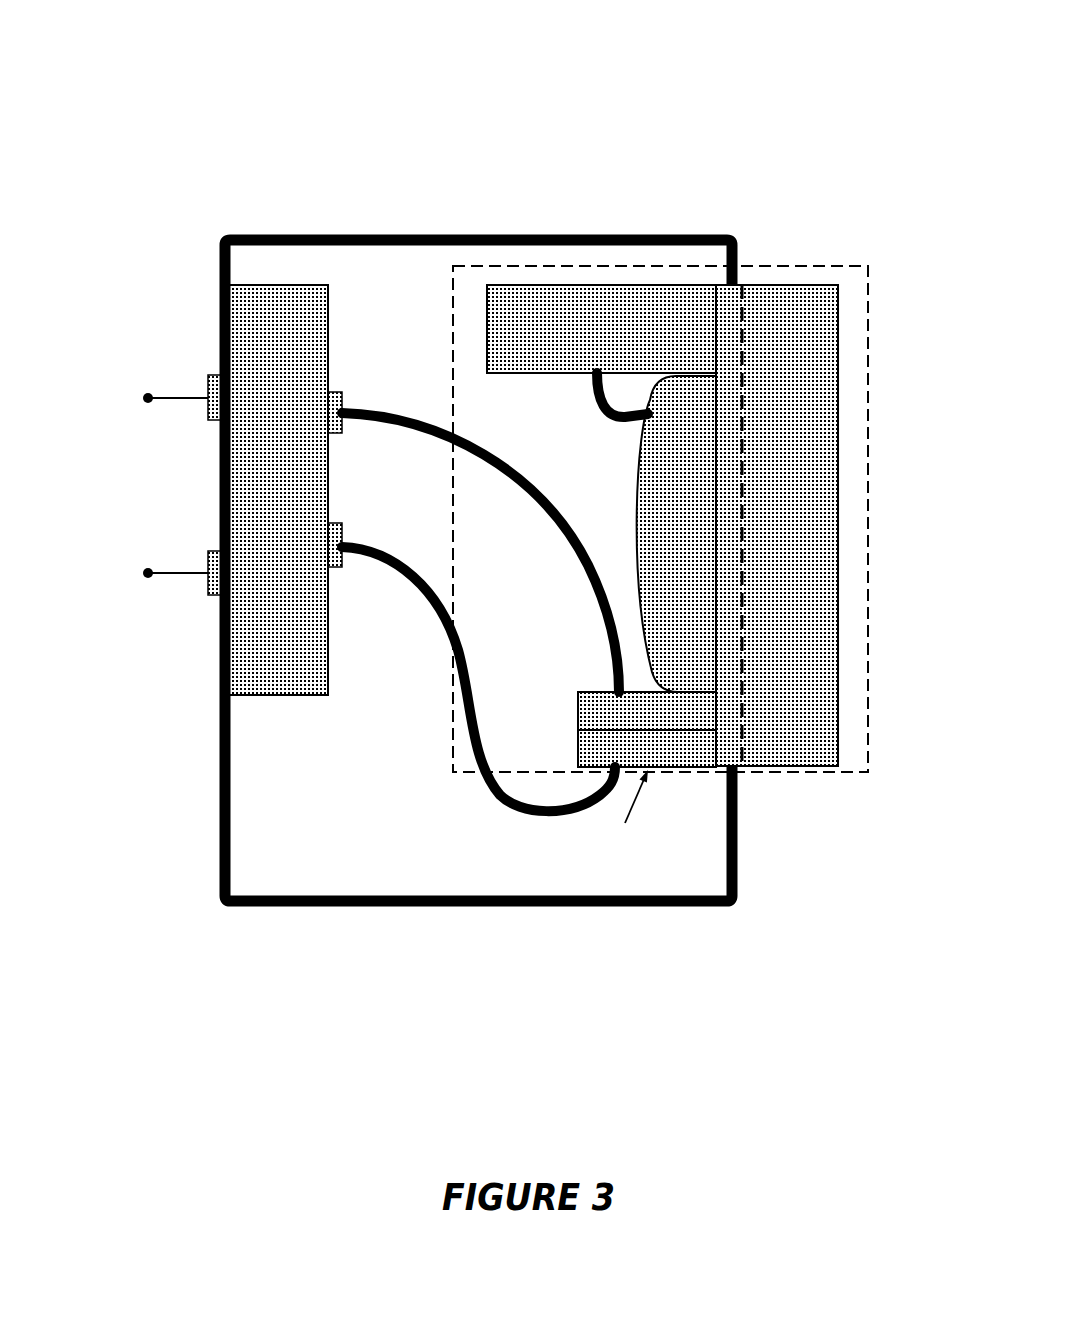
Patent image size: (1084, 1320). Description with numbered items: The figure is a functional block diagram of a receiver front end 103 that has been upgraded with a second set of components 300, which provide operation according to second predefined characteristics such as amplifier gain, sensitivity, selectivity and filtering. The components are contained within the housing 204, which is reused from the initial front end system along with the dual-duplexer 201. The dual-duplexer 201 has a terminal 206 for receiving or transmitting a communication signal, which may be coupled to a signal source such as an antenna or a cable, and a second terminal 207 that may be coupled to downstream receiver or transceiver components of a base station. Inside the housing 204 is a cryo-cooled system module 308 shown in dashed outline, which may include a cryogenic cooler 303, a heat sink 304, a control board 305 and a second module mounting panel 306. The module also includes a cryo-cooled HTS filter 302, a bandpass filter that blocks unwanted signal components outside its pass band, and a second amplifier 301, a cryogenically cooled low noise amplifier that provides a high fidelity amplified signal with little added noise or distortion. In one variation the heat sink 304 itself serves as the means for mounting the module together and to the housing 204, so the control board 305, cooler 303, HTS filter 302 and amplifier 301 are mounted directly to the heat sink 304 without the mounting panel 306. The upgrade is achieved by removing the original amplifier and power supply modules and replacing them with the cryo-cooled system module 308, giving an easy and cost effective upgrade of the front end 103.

The front end 103 is at (502, 459).
The second set of components 300 is at (708, 132).
The dual-duplexer 201 is at (236, 696).
The housing 204 is at (494, 235).
The terminal 206 is at (170, 400).
The second terminal 207 is at (185, 576).
The second amplifier 301 is at (577, 750).
The filter 302 is at (577, 707).
The cryogenic cooler 303 is at (632, 518).
The heat sink 304 is at (774, 757).
The control board 305 is at (528, 375).
The second module mounting panel 306 is at (735, 768).
The cryo-cooled system module 308 is at (868, 694).